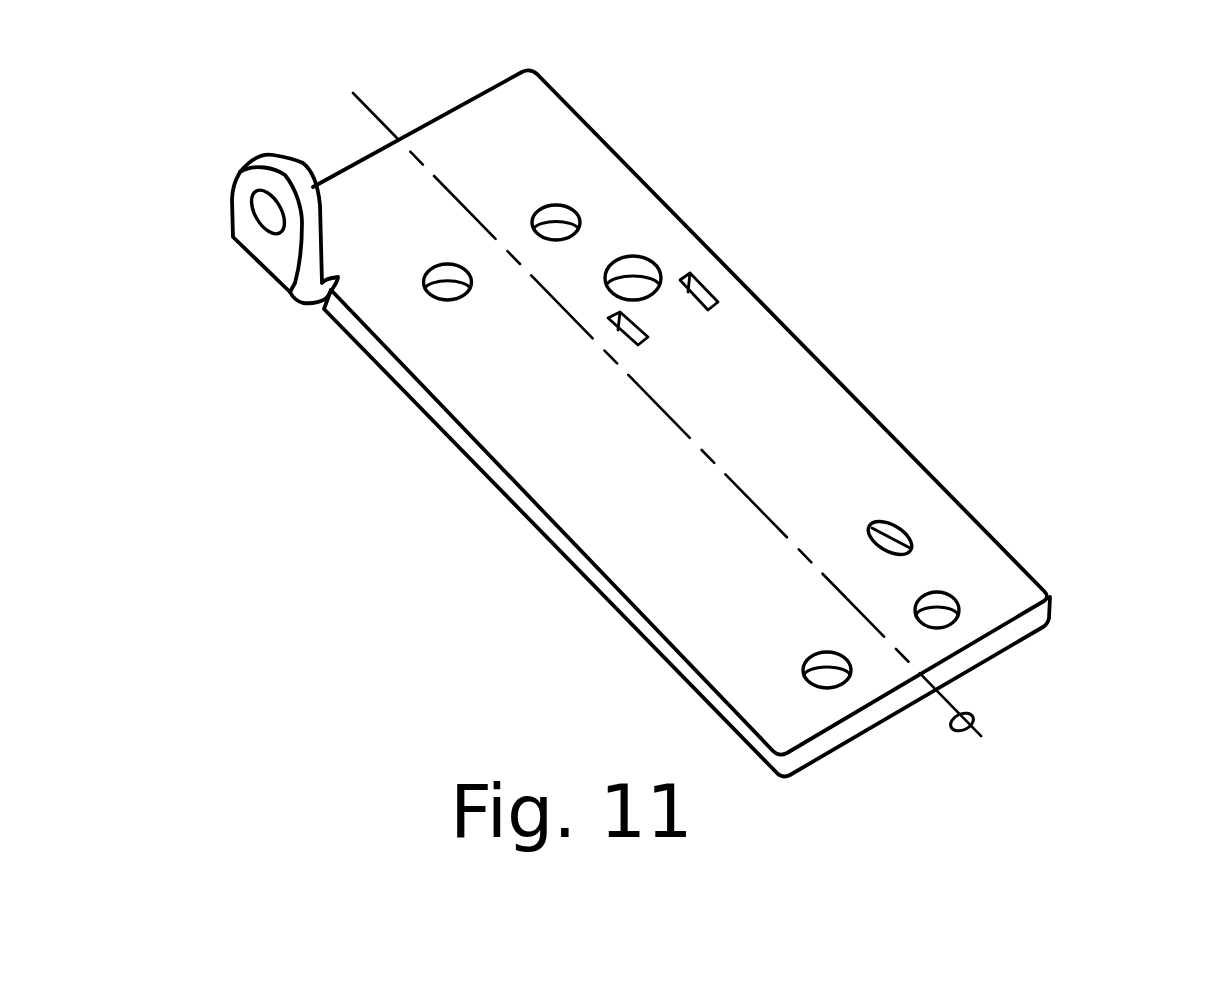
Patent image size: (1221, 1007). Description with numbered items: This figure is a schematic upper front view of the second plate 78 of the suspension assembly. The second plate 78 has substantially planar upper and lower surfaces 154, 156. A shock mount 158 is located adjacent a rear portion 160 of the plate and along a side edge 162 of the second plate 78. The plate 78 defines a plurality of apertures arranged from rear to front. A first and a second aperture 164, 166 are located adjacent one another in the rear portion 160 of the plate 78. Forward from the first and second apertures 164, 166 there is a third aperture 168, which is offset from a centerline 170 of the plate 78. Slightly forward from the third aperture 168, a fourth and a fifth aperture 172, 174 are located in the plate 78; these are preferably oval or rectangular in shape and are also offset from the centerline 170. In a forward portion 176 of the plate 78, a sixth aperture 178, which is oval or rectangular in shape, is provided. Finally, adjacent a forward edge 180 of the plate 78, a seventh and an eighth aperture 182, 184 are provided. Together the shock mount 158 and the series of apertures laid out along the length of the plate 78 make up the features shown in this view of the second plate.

The second plate 78 is at (477, 383).
The upper surface 154 is at (885, 384).
The lower surface 156 is at (556, 462).
The shock mount 158 is at (242, 197).
The rear portion 160 is at (657, 66).
The side edge 162 is at (382, 349).
The first aperture 164 is at (447, 268).
The second aperture 166 is at (557, 213).
The third aperture 168 is at (645, 270).
The centerline 170 is at (974, 716).
The fourth aperture 172 is at (642, 342).
The fifth aperture 174 is at (716, 303).
The forward portion 176 is at (605, 648).
The sixth aperture 178 is at (898, 531).
The forward edge 180 is at (1078, 601).
The seventh aperture 182 is at (818, 660).
The eighth aperture 184 is at (927, 600).